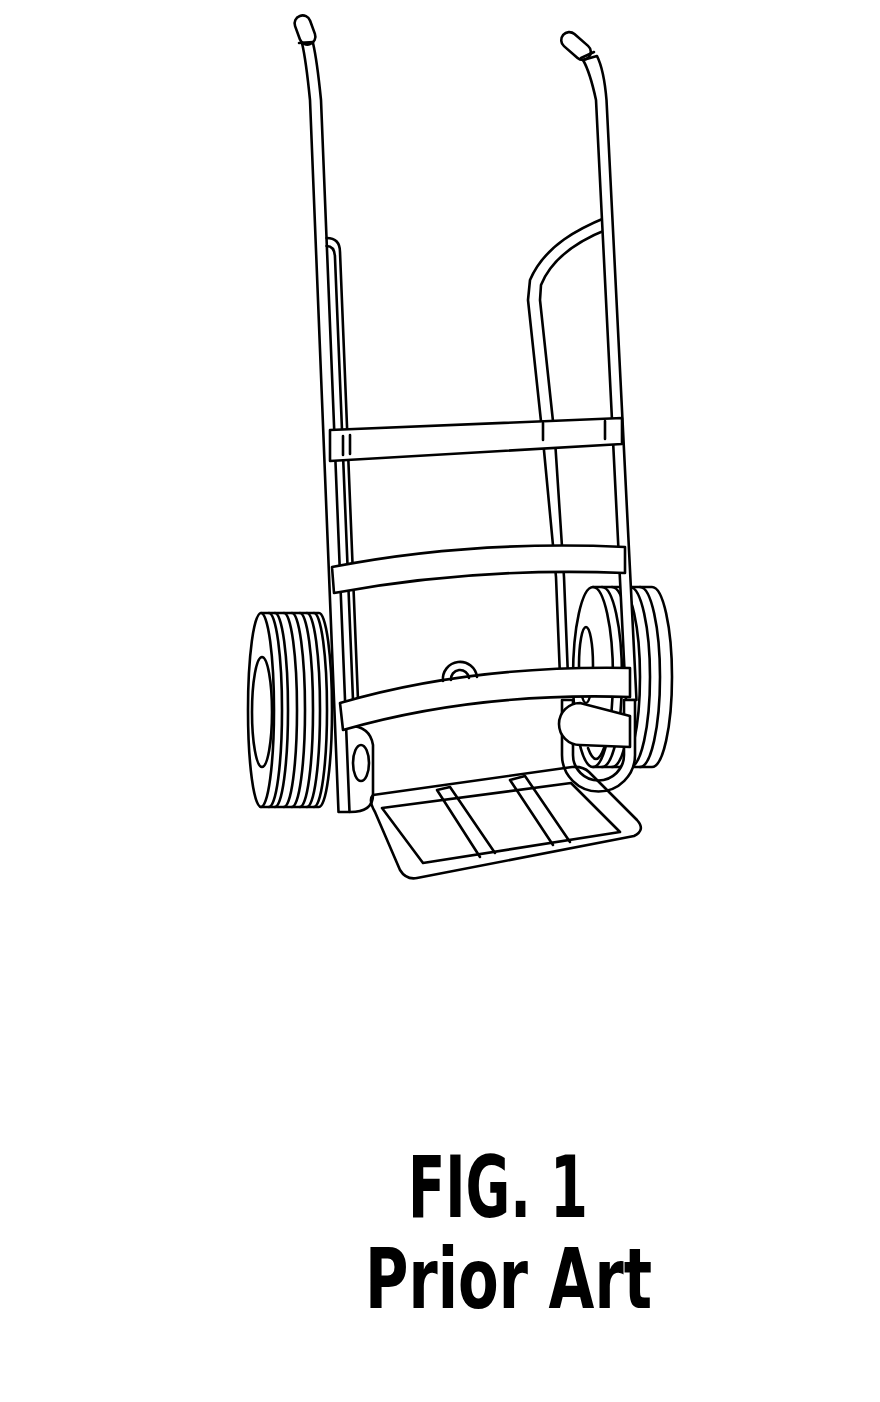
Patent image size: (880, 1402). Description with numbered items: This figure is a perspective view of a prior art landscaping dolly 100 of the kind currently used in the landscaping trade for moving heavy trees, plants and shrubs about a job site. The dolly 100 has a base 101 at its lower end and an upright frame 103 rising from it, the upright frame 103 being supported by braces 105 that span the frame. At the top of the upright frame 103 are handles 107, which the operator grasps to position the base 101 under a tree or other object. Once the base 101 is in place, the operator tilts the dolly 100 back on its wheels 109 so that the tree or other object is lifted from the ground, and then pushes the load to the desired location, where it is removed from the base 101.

The landscaping dolly 100 is at (107, 98).
The base 101 is at (373, 825).
The upright frame 103 is at (620, 383).
The braces 105 is at (433, 423).
The handles 107 is at (313, 187).
The wheels 109 is at (277, 612).